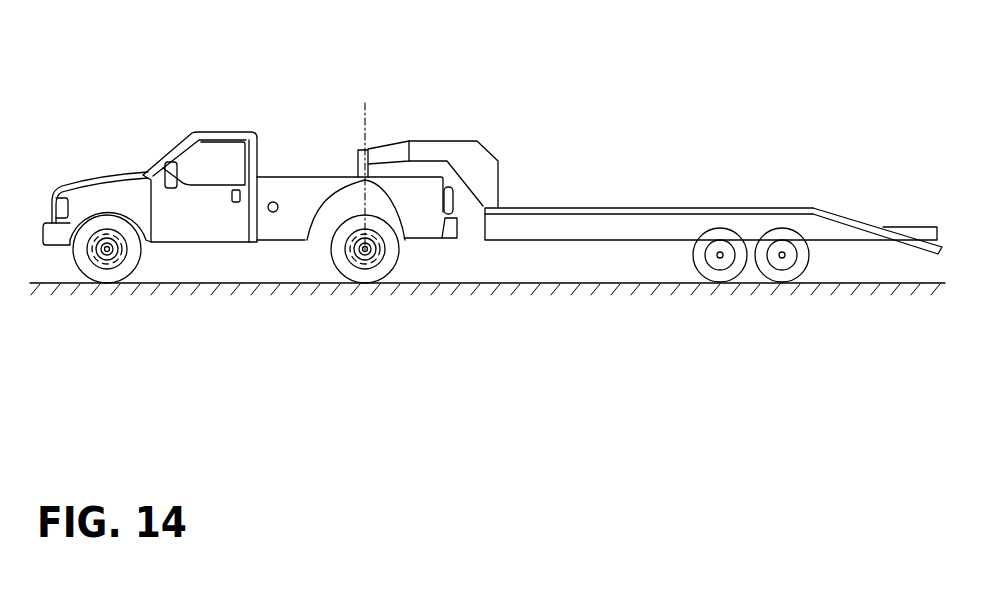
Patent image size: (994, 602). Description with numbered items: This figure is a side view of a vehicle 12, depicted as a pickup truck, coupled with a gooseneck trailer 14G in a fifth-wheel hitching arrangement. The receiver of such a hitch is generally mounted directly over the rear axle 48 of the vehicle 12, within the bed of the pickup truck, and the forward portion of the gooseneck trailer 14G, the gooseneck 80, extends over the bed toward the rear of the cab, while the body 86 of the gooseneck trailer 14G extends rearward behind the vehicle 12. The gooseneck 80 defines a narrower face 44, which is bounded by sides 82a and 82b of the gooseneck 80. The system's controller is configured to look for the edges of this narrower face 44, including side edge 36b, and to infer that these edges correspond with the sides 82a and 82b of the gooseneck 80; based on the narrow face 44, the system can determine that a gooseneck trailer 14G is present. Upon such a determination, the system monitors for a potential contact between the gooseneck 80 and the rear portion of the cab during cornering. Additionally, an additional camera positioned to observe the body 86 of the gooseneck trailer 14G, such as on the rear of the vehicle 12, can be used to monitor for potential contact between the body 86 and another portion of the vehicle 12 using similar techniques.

The vehicle 12 is at (250, 219).
The face 44 is at (358, 160).
The side of the gooseneck 82a is at (386, 140).
The side of the gooseneck 82b is at (445, 152).
The gooseneck 80 is at (442, 130).
The gooseneck trailer 14G is at (713, 250).
The side edge 36b is at (307, 240).
The rear axle 48 is at (378, 258).
The body 86 is at (612, 227).